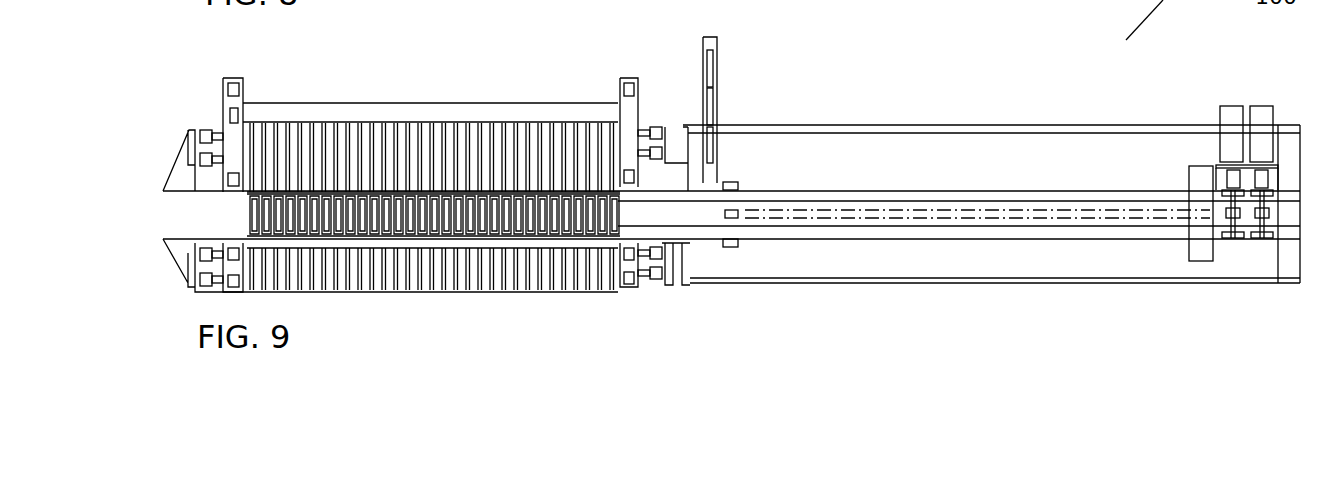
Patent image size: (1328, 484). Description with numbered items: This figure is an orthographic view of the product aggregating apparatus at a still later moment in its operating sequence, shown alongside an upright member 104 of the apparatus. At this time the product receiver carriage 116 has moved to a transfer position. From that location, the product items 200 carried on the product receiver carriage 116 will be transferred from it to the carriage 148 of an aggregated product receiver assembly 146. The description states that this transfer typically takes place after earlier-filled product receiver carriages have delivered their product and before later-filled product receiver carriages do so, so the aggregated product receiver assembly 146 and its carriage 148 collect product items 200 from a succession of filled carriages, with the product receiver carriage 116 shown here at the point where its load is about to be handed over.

The upright post 104 is at (708, 180).
The product receiver carriage 116 is at (663, 287).
The aggregated product receiver assembly 146 is at (467, 319).
The carriage 148 is at (637, 290).
The product items 200 is at (268, 198).